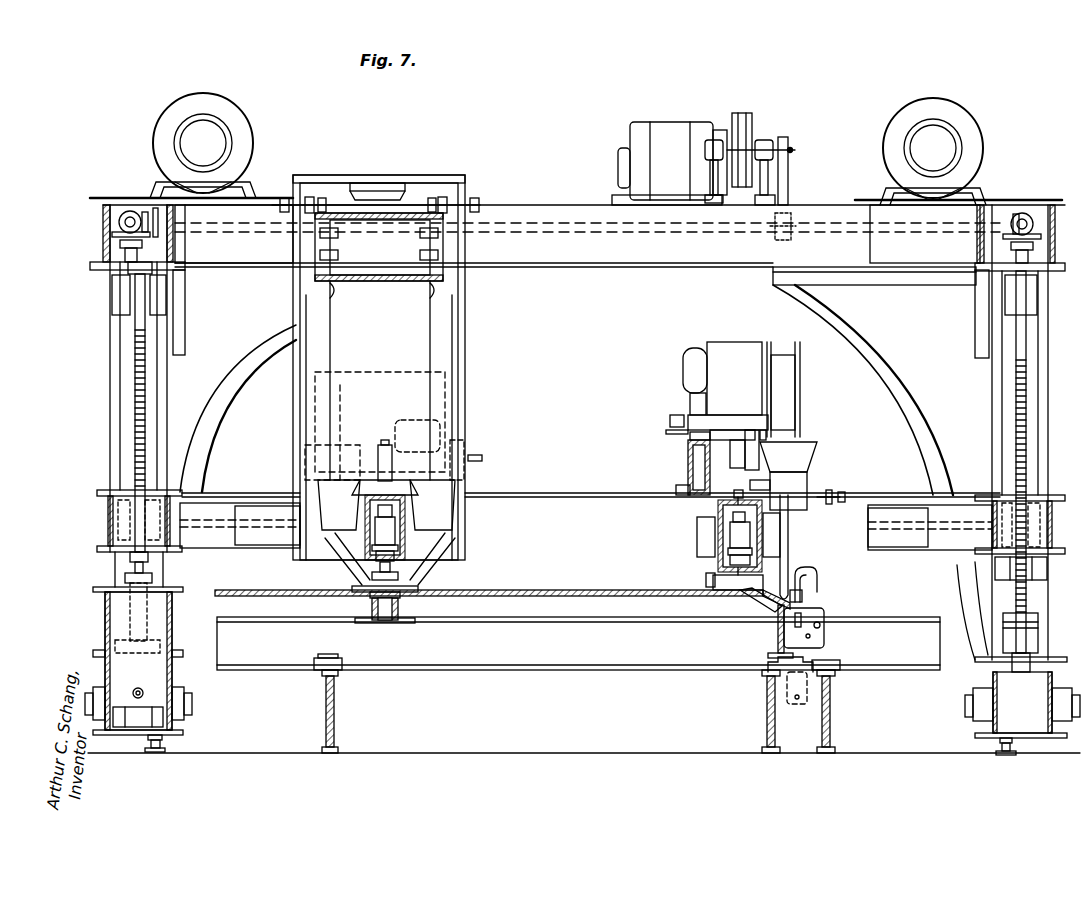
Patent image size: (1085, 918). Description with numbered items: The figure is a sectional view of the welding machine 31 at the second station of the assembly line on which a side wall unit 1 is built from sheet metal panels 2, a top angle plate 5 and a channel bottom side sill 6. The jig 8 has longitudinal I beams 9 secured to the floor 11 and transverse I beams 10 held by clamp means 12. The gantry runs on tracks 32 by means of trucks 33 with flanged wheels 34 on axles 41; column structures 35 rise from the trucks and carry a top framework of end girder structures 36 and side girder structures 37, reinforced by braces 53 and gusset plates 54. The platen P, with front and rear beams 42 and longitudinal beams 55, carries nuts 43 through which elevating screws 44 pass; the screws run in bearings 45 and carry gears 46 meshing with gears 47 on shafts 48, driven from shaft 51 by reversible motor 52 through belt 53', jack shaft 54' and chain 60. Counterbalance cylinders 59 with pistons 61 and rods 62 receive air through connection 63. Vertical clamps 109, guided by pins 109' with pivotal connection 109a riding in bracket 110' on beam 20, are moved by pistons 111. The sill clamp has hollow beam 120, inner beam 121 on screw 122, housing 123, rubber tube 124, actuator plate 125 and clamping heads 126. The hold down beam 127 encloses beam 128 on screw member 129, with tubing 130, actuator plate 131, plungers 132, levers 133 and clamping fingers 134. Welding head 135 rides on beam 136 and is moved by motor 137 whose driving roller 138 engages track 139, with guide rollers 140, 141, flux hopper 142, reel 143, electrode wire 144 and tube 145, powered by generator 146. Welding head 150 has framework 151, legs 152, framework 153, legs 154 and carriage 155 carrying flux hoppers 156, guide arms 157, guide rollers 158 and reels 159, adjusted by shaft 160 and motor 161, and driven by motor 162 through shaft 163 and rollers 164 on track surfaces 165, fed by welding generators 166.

The side wall unit 1 is at (1075, 694).
The sheet metal panels 2 is at (502, 592).
The top angle plate 5 is at (804, 594).
The bottom side sill 6 is at (372, 604).
The jig 8 is at (322, 706).
The longitudinal I beams 9 is at (336, 712).
The transverse I beams 10 is at (590, 665).
The floor 11 is at (462, 753).
The clamp means 12 is at (312, 666).
The beam 20 is at (770, 660).
The welding machine 31 is at (637, 270).
The tracks 32 is at (166, 746).
The trucks 33 is at (106, 660).
The flanged wheels 34 is at (148, 737).
The column structure 35 is at (110, 448).
The end girder structures 36 is at (528, 205).
The side girder structures 37 is at (103, 226).
The axles 41 is at (192, 702).
The front and rear beams 42 is at (600, 497).
The nuts 43 is at (113, 516).
The elevating screws 44 is at (135, 418).
The bearings 45 is at (118, 268).
The gears 46 is at (120, 242).
The gears 47 is at (128, 210).
The shafts 48 is at (118, 218).
The shaft 51 is at (572, 222).
The reversible motor 52 is at (668, 135).
The braces 53 is at (581, 382).
The belt 53' is at (761, 138).
The gusset plates 54 is at (562, 187).
The jack shaft 54' is at (812, 139).
The longitudinal beams 55 is at (100, 492).
The cylinders 59 is at (122, 612).
The chain 60 is at (789, 178).
The pistons 61 is at (172, 611).
The rods 62 is at (160, 606).
The connection 63 is at (145, 690).
The vertical clamps 109 is at (827, 584).
The pins 109' is at (840, 622).
The pivotal connection 109a is at (826, 640).
The bracket 110' is at (831, 608).
The pistons 111 is at (799, 704).
The hollow beam structure 120 is at (395, 518).
The internal hollow beam structure 121 is at (395, 529).
The screw 122 is at (410, 505).
The housing 123 is at (425, 548).
The rubber tube 124 is at (420, 535).
The actuator plate 125 is at (402, 575).
The clamping heads 126 is at (368, 574).
The beam 127 is at (720, 508).
The hollow beam 128 is at (730, 527).
The screw member 129 is at (760, 522).
The rubber tubing 130 is at (760, 546).
The actuator plate 131 is at (765, 560).
The plungers 132 is at (745, 580).
The pivoted lever 133 is at (758, 594).
The clamping finger 134 is at (780, 612).
The welding head structure 135 is at (738, 344).
The hollow beam 136 is at (688, 461).
The reversible electric motor 137 is at (685, 368).
The driving roller 138 is at (695, 425).
The track 139 is at (690, 437).
The guide roller 140 is at (728, 481).
The guide roller 141 is at (670, 419).
The flux hopper 142 is at (806, 456).
The reel 143 is at (800, 389).
The electrode wire 144 is at (782, 410).
The tube 145 is at (790, 548).
The electric welding generator 146 is at (902, 118).
The welding head structure 150 is at (458, 392).
The rectangular upper framework 151 is at (332, 300).
The legs 152 is at (428, 341).
The top rectangular framework 153 is at (440, 177).
The legs 154 is at (293, 395).
The carriage 155 is at (436, 410).
The flux hoppers 156 is at (318, 500).
The guide arms 157 is at (332, 560).
The guide rollers 158 is at (356, 591).
The electrode wire reels 159 is at (340, 440).
The shaft 160 is at (375, 444).
The motor 161 is at (412, 420).
The reversible motor 162 is at (372, 190).
The shaft 163 is at (414, 190).
The rollers 164 is at (320, 195).
The track surfaces 165 is at (315, 215).
The welding generators 166 is at (241, 138).
The platen P is at (546, 497).